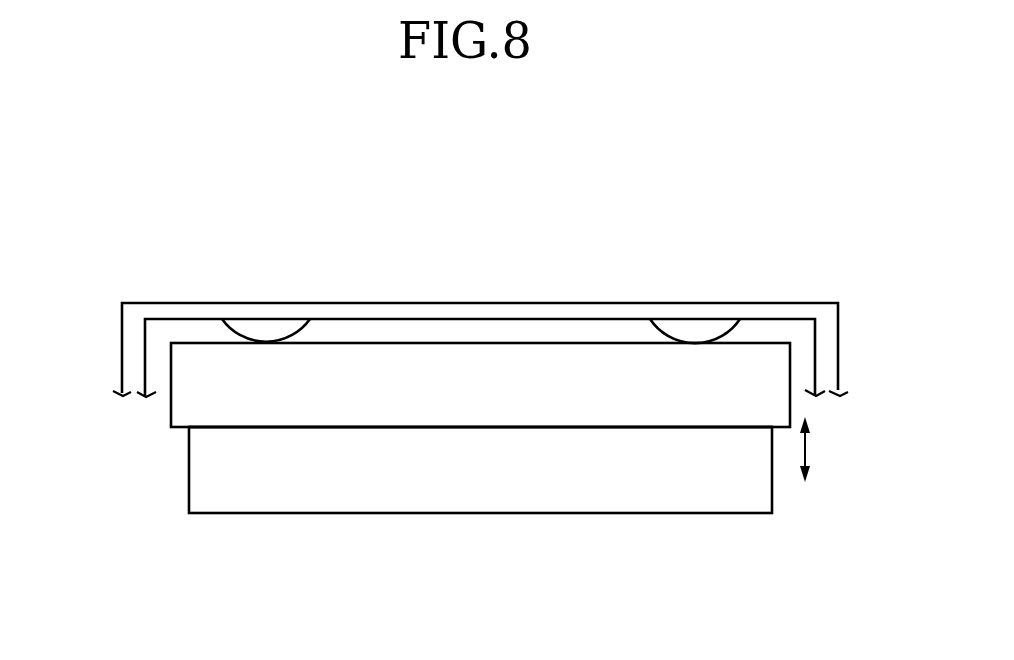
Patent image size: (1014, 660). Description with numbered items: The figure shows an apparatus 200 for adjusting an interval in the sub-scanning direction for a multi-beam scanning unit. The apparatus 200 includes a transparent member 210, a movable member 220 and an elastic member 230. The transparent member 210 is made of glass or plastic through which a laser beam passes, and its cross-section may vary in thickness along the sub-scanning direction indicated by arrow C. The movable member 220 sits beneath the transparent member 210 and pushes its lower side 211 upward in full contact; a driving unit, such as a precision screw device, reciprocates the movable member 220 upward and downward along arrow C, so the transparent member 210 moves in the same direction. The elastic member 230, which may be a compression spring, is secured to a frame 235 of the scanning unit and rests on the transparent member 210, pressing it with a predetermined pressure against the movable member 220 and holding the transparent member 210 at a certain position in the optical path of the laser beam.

The sub-scanning interval adjusting apparatus 200 is at (161, 160).
The transparent member 210 is at (188, 370).
The lower side of the transparent member 211 is at (300, 430).
The movable member 220 is at (197, 473).
The elastic member 230 is at (267, 328).
The frame 235 is at (790, 303).
The sub-scanning direction arrow C is at (807, 447).